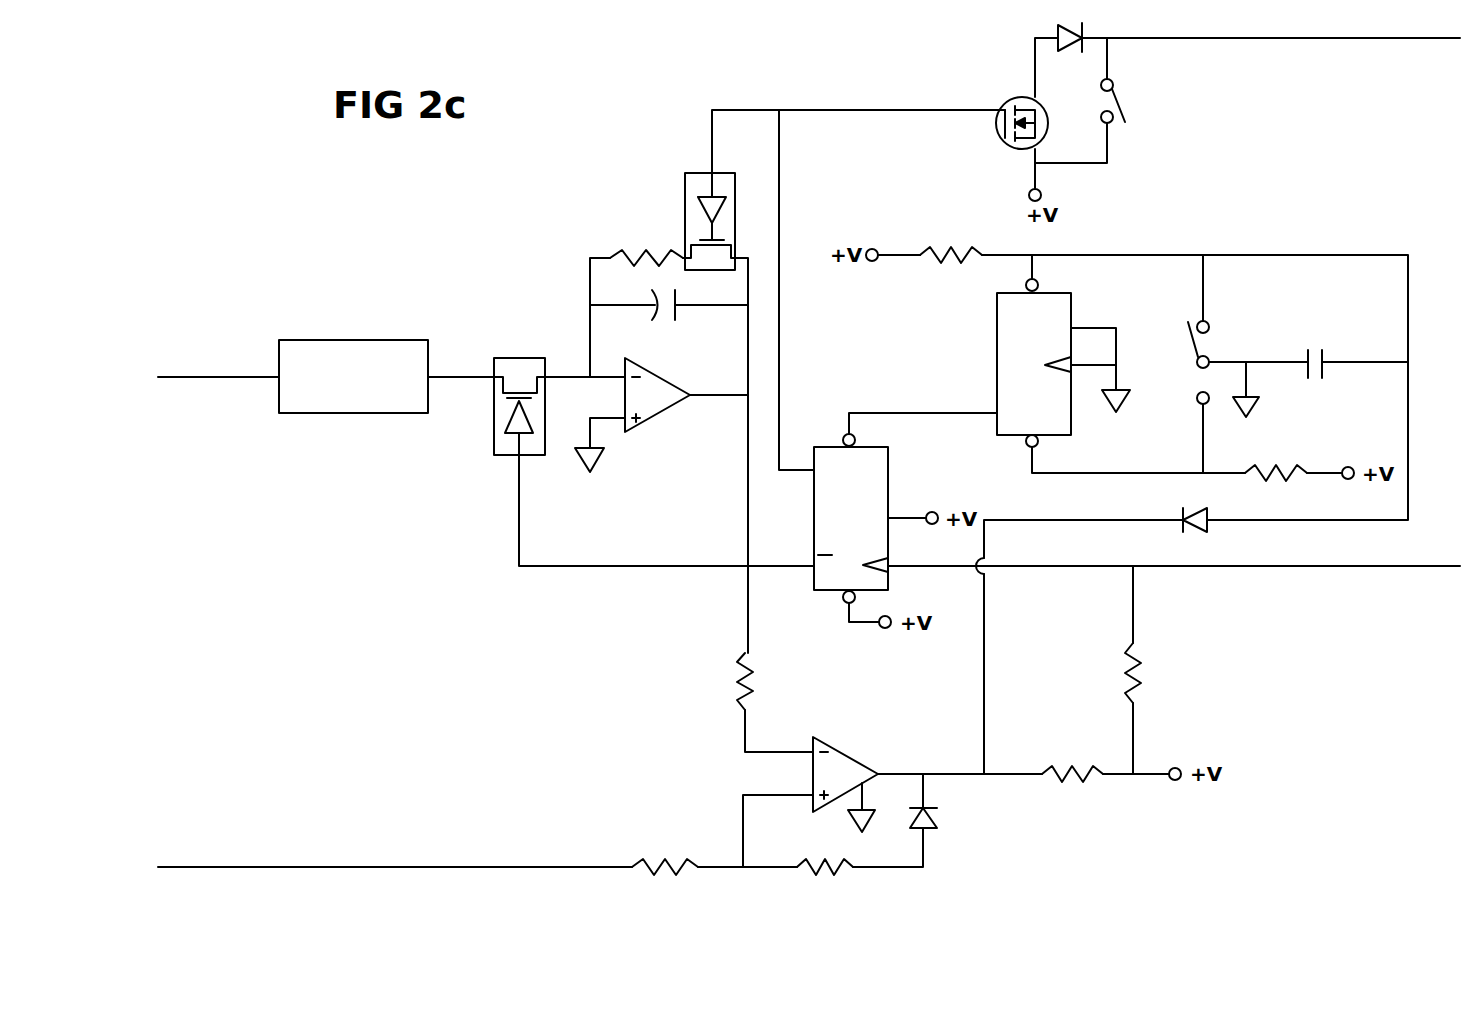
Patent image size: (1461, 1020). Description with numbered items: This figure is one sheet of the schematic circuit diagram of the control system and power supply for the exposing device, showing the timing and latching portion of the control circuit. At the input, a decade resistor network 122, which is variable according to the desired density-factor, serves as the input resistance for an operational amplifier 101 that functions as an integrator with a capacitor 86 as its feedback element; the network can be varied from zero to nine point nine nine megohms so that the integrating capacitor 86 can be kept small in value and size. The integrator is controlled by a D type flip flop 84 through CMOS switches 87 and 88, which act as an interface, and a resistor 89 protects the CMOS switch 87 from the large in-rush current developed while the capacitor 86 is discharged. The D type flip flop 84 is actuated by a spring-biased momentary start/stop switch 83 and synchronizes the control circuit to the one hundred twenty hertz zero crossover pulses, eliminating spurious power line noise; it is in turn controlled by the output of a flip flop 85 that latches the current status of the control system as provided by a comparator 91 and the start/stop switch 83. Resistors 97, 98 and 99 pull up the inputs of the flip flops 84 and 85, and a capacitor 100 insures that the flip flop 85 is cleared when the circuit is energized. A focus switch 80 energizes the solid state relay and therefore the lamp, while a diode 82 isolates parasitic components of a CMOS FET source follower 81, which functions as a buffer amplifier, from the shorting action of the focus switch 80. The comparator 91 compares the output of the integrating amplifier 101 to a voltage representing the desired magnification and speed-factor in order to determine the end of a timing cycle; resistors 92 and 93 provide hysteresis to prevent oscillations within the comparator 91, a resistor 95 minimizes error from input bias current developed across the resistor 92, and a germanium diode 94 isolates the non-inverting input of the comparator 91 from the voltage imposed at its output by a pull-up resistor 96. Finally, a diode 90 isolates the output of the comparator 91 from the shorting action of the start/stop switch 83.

The decade resistor network 122 is at (357, 326).
The CMOS switch 88 is at (494, 440).
The operational amplifier 101 is at (665, 415).
The resistor 89 is at (615, 255).
The capacitor 86 is at (677, 318).
The CMOS switch 87 is at (685, 195).
The D type flip flop 84 is at (888, 470).
The flip flop 85 is at (997, 328).
The CMOS FET source follower 81 is at (1005, 145).
The diode 82 is at (1085, 28).
The focus switch 80 is at (1115, 82).
The resistor 99 is at (945, 250).
The momentary start/stop switch 83 is at (1210, 352).
The capacitor 100 is at (1312, 348).
The resistor 98 is at (1272, 472).
The diode 90 is at (1205, 514).
The resistor 95 is at (740, 668).
The resistor 97 is at (1140, 665).
The comparator 91 is at (843, 750).
The resistor 92 is at (660, 860).
The resistor 93 is at (825, 872).
The diode 94 is at (940, 814).
The pull-up resistor 96 is at (1078, 780).